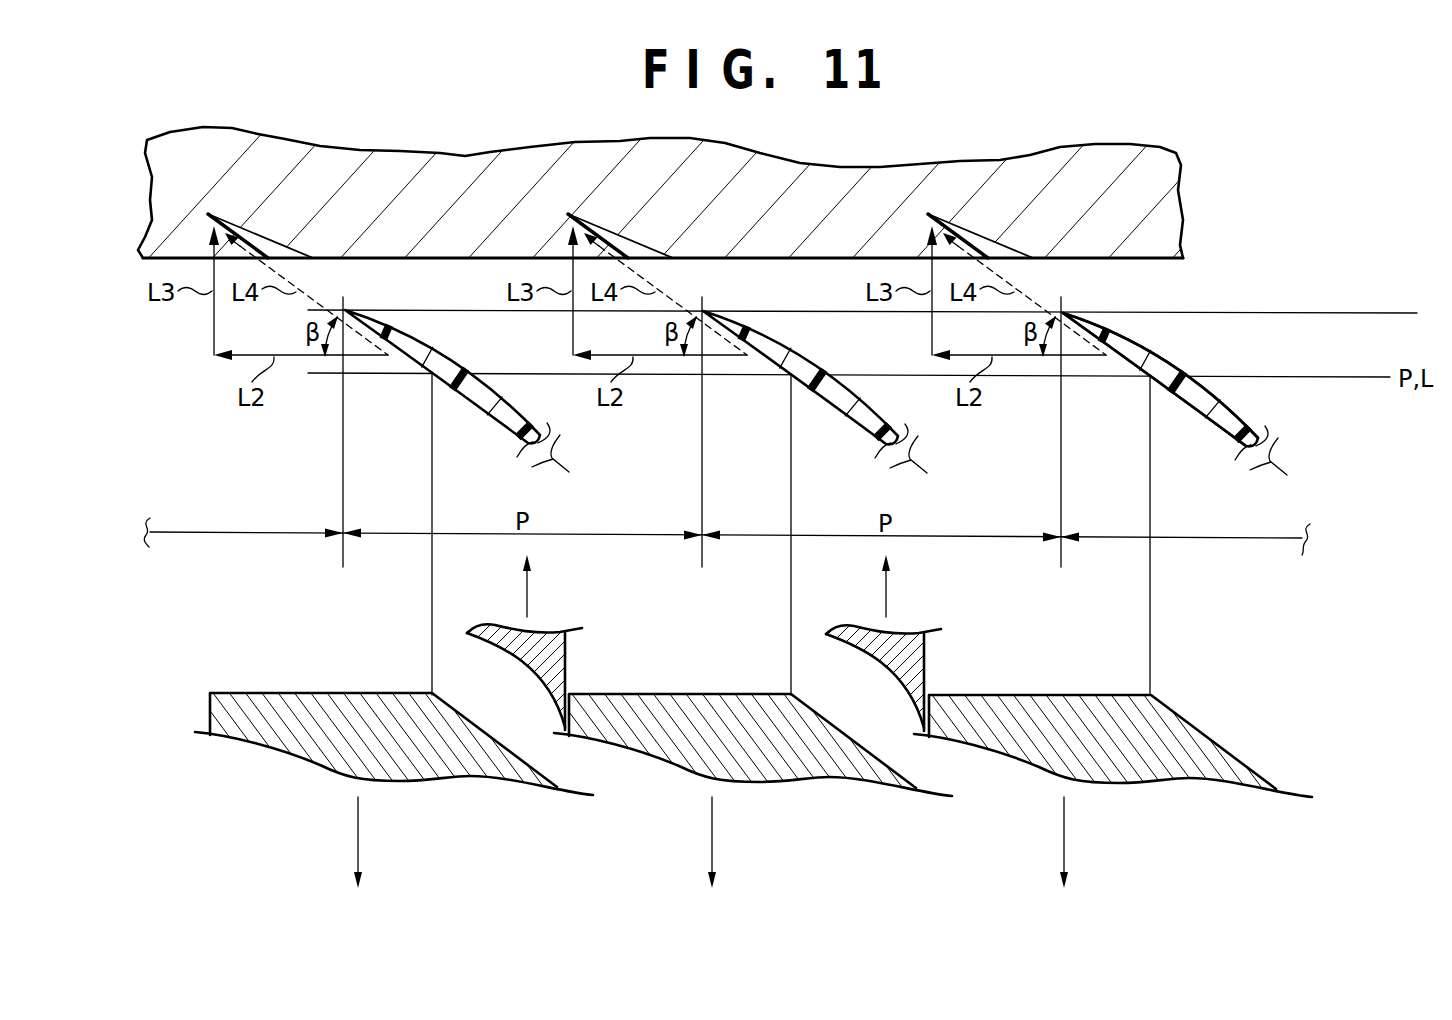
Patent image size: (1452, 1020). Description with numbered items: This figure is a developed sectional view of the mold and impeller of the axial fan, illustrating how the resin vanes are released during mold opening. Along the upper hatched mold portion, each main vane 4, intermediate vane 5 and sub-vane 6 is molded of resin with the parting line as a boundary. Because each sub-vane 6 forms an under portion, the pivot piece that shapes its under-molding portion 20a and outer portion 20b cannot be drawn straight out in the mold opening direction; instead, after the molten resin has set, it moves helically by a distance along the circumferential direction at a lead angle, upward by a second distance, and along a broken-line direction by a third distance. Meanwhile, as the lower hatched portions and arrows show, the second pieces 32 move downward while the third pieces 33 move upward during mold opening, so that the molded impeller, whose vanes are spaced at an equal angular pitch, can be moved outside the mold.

The main vane 4 is at (1240, 406).
The intermediate vane 5 is at (1172, 357).
The sub-vane 6 is at (1131, 358).
The under-molding portion 20a is at (994, 240).
The outer portion 20b is at (997, 240).
The second piece 32 is at (423, 753).
The third piece 33 is at (541, 650).